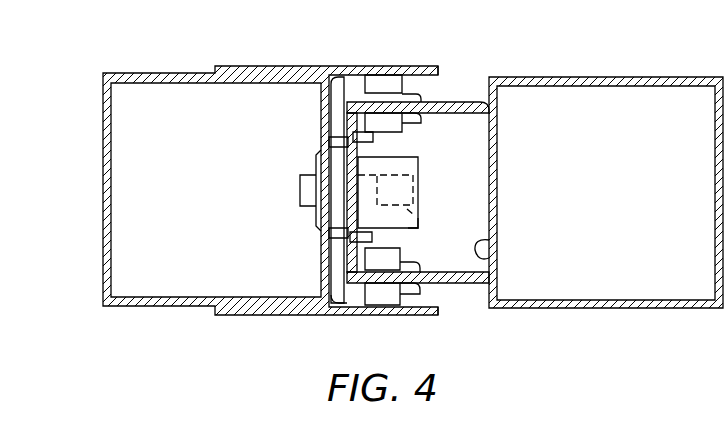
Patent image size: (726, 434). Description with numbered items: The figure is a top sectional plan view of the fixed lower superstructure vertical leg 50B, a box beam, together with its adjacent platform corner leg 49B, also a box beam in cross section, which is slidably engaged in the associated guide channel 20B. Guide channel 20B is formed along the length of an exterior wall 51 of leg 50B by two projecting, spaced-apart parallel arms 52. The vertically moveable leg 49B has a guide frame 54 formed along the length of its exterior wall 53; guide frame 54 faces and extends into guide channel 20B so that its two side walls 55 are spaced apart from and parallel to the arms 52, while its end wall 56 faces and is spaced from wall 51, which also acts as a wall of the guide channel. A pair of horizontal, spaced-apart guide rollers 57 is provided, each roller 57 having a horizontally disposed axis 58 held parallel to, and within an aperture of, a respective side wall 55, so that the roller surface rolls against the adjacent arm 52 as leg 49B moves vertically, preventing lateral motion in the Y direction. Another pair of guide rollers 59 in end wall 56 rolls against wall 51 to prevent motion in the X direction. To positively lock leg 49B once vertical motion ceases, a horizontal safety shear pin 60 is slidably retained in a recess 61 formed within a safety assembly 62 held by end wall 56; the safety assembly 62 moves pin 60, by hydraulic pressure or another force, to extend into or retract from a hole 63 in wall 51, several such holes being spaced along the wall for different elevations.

The guide channel 20B is at (455, 68).
The platform corner leg 49B is at (645, 203).
The fixed lower superstructure vertical leg 50B is at (198, 195).
The exterior wall 51 is at (334, 77).
The projecting arms 52 is at (418, 70).
The exterior wall 53 is at (493, 244).
The guide frame 54 is at (469, 185).
The side walls 55 is at (478, 100).
The end wall 56 is at (331, 264).
The guide rollers 57 is at (374, 136).
The axis 58 is at (418, 117).
The guide rollers 59 is at (330, 138).
The safety shear pin 60 is at (300, 192).
The recess 61 is at (418, 228).
The safety assembly 62 is at (418, 210).
The hole 63 is at (317, 174).